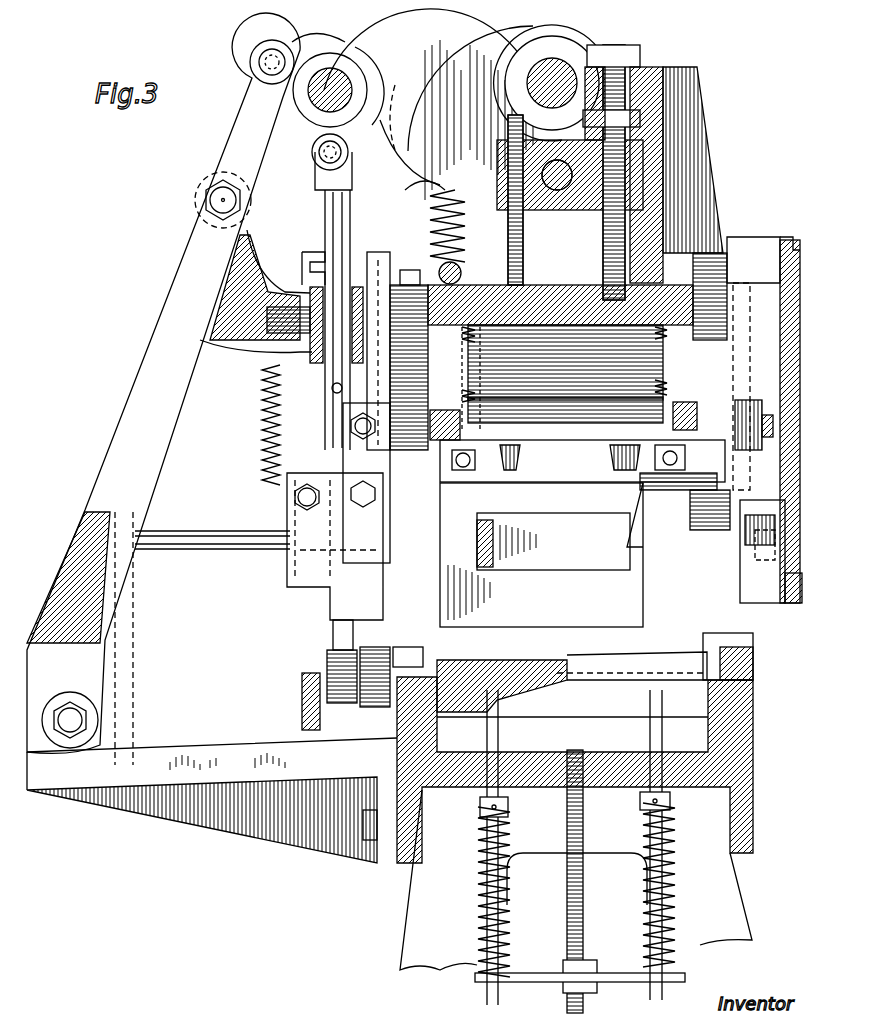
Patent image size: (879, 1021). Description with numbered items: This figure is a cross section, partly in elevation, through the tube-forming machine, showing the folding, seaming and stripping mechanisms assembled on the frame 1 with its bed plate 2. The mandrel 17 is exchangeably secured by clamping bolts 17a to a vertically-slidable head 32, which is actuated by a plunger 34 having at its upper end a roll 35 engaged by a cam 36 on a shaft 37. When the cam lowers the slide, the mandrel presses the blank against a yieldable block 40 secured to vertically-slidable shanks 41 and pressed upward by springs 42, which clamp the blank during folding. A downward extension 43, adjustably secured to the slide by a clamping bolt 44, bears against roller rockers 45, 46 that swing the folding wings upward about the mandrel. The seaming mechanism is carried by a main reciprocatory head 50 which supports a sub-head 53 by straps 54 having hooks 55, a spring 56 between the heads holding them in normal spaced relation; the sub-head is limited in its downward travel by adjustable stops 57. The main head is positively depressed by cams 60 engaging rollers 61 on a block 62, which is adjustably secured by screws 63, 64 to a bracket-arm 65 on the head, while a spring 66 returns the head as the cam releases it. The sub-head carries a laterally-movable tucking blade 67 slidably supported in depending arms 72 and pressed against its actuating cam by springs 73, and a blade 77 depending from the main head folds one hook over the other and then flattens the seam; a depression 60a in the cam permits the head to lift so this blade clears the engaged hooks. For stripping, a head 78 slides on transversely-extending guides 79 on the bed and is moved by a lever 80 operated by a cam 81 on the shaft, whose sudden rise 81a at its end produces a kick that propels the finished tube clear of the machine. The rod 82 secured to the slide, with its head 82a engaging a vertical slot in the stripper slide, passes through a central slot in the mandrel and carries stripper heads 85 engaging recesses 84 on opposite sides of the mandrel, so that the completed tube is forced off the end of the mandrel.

The frame 1 is at (725, 888).
The bed plate 2 is at (753, 760).
The mandrel 17 is at (643, 585).
The clamping bolts 17a is at (356, 425).
The vertically-slidable head 32 is at (340, 428).
The plunger 34 is at (325, 212).
The roll 35 is at (313, 152).
The cam 36 is at (400, 35).
The shaft 37 is at (306, 97).
The yieldable block 40 is at (650, 660).
The vertically-slidable shanks 41 is at (488, 770).
The springs 42 is at (480, 880).
The downward extension 43 is at (297, 570).
The clamping bolt 44 is at (300, 505).
The roller rocker 45 is at (380, 650).
The roller rocker 46 is at (330, 652).
The main reciprocatory head 50 is at (470, 290).
The sub-head 53 is at (698, 403).
The straps 54 is at (385, 290).
The hooks 55 is at (700, 250).
The spring 56 is at (690, 370).
The stops 57 is at (748, 545).
The cams 60 is at (527, 30).
The depression 60a is at (428, 178).
The rollers 61 is at (512, 72).
The block 62 is at (497, 170).
The screw 63 is at (603, 244).
The screw 64 is at (523, 250).
The bracket-arm 65 is at (655, 165).
The spring 66 is at (425, 215).
The tucking blade 67 is at (640, 492).
The depending arms 72 is at (462, 425).
The springs 73 is at (610, 460).
The blade 77 is at (565, 374).
The stripper head 78 is at (130, 690).
The transversely-extending guides 79 is at (235, 748).
The lever 80 is at (160, 343).
The cam 81 is at (256, 40).
The sudden rise 81a is at (318, 30).
The rod 82 is at (218, 530).
The head 82a is at (100, 505).
The recesses 84 is at (627, 547).
The stripper heads 85 is at (478, 560).